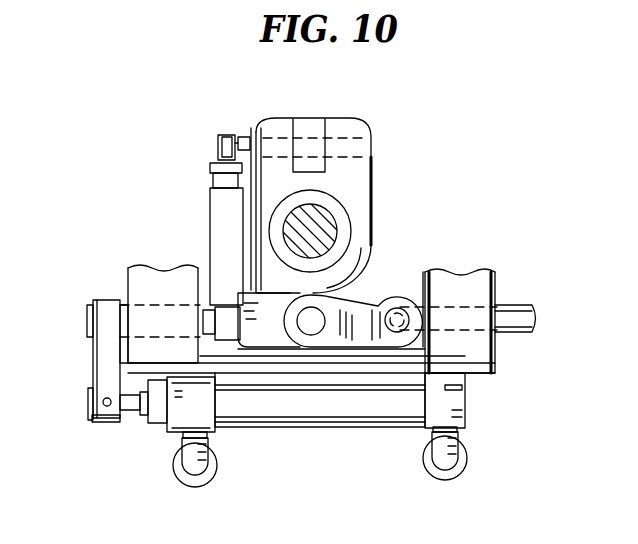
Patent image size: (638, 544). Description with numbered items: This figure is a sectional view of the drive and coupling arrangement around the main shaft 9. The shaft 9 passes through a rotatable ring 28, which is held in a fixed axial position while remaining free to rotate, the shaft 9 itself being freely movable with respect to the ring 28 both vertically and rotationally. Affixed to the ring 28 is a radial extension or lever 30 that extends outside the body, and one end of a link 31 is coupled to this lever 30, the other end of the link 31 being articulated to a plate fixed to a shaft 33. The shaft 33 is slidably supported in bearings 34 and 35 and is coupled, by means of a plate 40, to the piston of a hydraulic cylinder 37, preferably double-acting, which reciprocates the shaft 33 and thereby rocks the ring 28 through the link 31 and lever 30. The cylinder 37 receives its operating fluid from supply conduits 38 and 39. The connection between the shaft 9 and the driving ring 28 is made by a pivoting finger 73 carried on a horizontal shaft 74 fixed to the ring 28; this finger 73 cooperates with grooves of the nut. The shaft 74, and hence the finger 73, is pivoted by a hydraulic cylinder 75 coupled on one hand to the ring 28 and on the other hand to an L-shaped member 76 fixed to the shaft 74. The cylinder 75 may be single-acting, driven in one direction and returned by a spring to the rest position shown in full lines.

The shaft 9 is at (328, 230).
The rotatable ring 28 is at (357, 172).
The lever 30 is at (289, 347).
The link 31 is at (376, 307).
The shaft 33 is at (205, 310).
The bearing 34 is at (145, 275).
The bearing 35 is at (482, 292).
The hydraulic cylinder 37 is at (265, 408).
The supply conduit 38 is at (187, 481).
The supply conduit 39 is at (467, 466).
The plate 40 is at (100, 364).
The pivoting finger 73 is at (311, 125).
The shaft 74 is at (243, 137).
The hydraulic cylinder 75 is at (215, 213).
The L-shaped member 76 is at (225, 137).